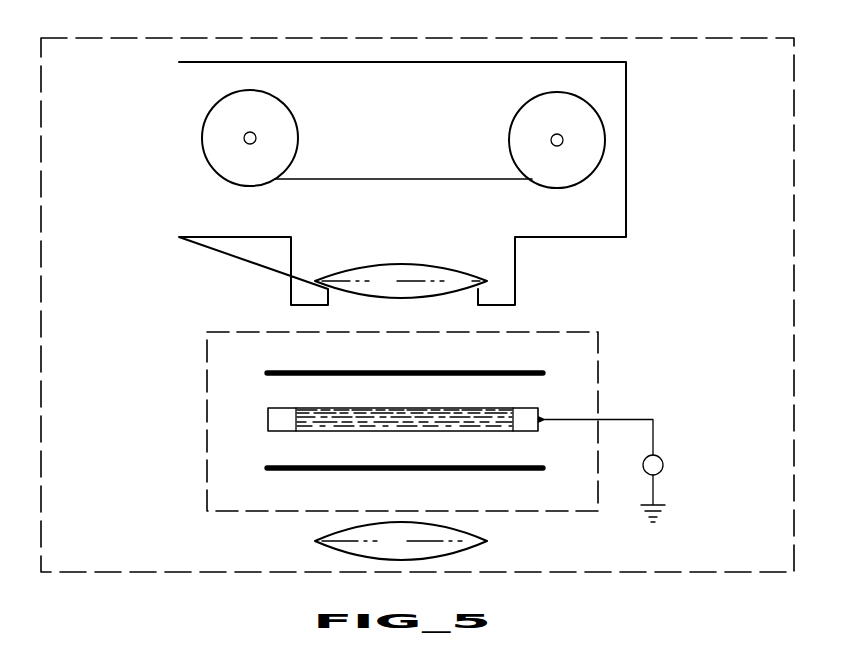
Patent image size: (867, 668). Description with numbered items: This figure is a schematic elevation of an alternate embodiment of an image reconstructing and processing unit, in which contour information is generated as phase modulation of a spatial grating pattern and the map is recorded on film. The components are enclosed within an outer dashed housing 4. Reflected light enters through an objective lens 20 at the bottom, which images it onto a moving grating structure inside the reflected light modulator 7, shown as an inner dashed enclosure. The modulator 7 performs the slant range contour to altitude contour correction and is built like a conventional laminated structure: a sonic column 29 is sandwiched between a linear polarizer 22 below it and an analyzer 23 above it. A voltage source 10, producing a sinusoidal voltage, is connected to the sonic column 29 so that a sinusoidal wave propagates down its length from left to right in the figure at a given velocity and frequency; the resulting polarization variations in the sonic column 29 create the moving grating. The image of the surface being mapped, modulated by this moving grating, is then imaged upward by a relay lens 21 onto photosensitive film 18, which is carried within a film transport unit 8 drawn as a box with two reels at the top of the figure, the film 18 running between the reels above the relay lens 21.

The housing 4 is at (183, 585).
The reflected light modulator 7 is at (610, 379).
The film transport unit 8 is at (169, 160).
The voltage source 10 is at (660, 457).
The photosensitive film 18 is at (375, 179).
The objective lens 20 is at (318, 544).
The relay lens 21 is at (440, 264).
The linear polarizer 22 is at (520, 473).
The analyzer 23 is at (525, 371).
The sonic column 29 is at (268, 403).